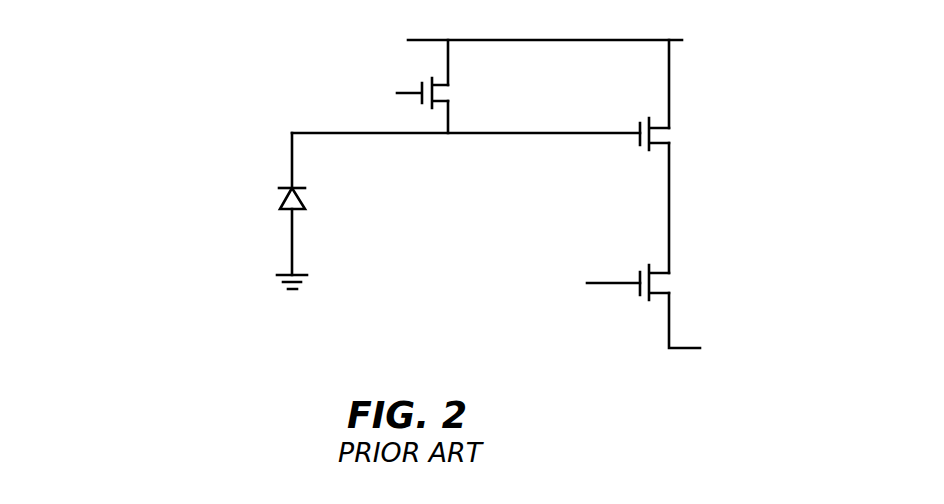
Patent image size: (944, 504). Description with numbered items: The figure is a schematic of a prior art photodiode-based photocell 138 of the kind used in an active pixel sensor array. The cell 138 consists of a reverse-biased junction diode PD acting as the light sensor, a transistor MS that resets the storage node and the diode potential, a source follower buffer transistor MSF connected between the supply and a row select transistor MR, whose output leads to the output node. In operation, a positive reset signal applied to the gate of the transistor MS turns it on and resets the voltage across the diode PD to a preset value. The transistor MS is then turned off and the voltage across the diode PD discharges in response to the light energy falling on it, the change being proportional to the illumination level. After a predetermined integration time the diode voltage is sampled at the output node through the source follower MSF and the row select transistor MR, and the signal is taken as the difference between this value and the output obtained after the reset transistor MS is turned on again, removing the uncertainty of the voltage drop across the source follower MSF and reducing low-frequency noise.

The photodiode-based photocell 138 is at (173, 120).
The reset transistor MS is at (443, 91).
The source follower buffer transistor MSF is at (681, 133).
The row select transistor MR is at (674, 282).
The junction diode PD is at (208, 207).